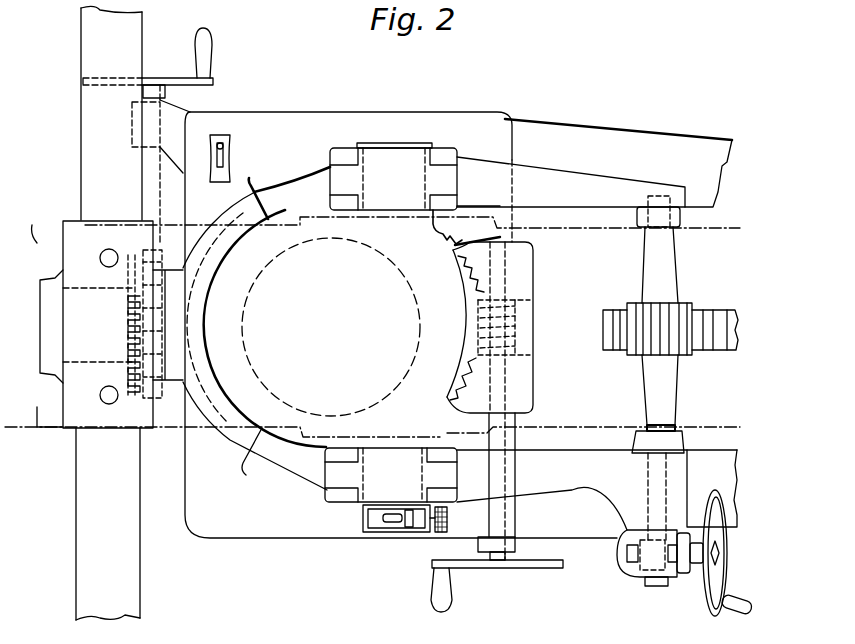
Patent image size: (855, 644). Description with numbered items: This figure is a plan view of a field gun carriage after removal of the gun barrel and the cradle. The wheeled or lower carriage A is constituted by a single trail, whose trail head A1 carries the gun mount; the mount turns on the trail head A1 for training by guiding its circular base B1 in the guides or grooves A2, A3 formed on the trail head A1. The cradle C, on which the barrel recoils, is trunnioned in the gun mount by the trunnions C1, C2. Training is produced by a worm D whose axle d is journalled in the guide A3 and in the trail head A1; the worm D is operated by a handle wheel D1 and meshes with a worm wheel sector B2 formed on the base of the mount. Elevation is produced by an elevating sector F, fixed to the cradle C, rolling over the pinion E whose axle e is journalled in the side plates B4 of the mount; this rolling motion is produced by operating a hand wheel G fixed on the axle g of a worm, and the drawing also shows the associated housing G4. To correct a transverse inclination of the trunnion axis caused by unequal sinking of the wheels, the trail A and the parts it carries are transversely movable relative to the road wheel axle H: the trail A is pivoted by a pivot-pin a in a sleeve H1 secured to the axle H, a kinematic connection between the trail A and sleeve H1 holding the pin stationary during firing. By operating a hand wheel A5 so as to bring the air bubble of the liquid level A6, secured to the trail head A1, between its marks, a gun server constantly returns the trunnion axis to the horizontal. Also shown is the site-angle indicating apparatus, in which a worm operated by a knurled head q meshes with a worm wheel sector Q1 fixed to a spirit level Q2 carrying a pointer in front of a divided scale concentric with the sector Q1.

The road wheel axle H is at (85, 117).
The sleeve H1 is at (80, 243).
The pivot-pin a is at (50, 333).
The hand wheel A5 is at (175, 80).
The trail head A1 is at (320, 127).
The liquid level A6 is at (226, 156).
The circular base B1 is at (243, 400).
The guide A2 is at (248, 192).
The trunnion C2 is at (398, 142).
The wheeled or lower carriage A is at (650, 142).
The side plates B4 is at (560, 180).
The worm wheel sector B2 is at (445, 237).
The guide A3 is at (525, 390).
The axle d is at (508, 270).
The worm D is at (520, 318).
The trunnion C1 is at (362, 468).
The worm wheel sector Q1 is at (363, 527).
The spirit level Q2 is at (393, 527).
The knurled head q is at (433, 537).
The handle wheel D1 is at (530, 562).
The pinion E is at (675, 325).
The elevating sector F is at (713, 343).
The axle e is at (653, 385).
The cradle C is at (603, 427).
The hand wheel G is at (713, 493).
The bearing housing G4 is at (650, 568).
The axle g is at (692, 563).